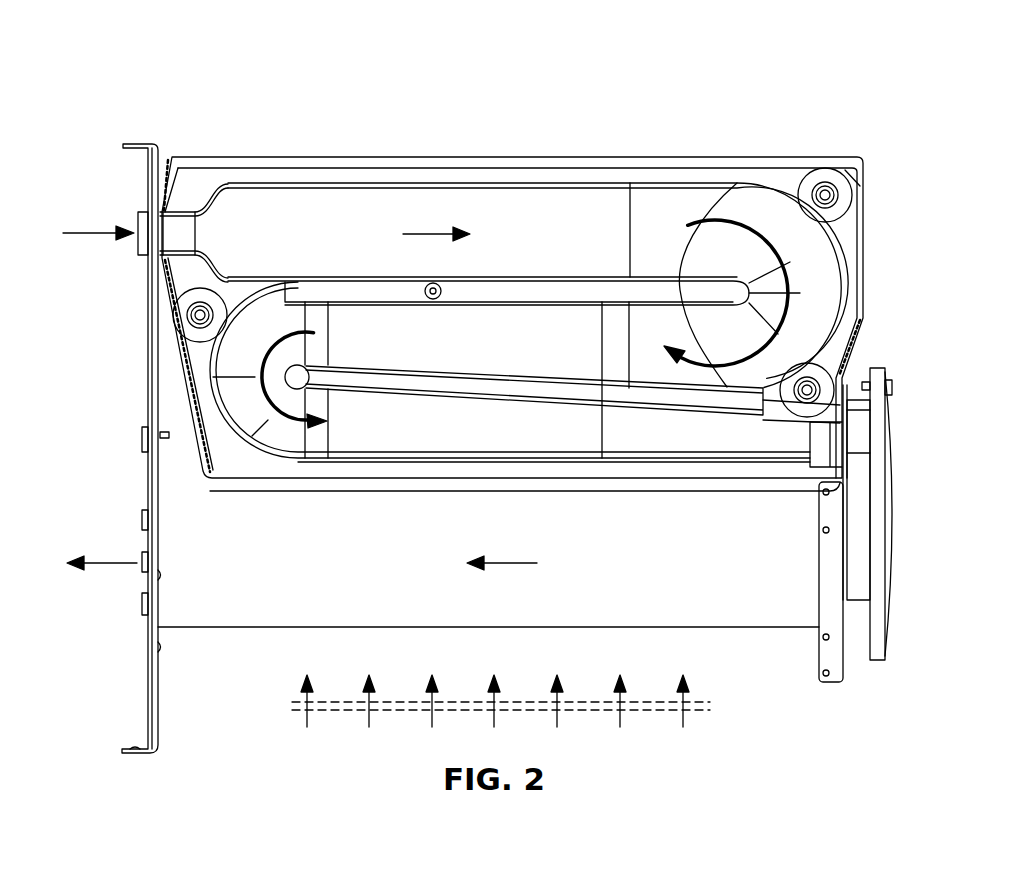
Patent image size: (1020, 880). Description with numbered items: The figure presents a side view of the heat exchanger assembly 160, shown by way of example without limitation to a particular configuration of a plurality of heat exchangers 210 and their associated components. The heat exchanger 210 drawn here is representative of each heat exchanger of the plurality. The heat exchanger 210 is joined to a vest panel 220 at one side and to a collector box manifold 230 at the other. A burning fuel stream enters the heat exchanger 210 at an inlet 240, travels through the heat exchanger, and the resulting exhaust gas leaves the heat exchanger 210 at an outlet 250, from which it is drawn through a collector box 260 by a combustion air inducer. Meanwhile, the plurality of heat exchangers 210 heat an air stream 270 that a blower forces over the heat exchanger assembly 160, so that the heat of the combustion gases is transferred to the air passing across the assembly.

The heat exchanger assembly 160 is at (297, 67).
The heat exchanger 210 is at (775, 157).
The vest panel 220 is at (148, 350).
The collector box manifold 230 is at (880, 660).
The inlet 240 is at (139, 223).
The outlet 250 is at (840, 437).
The collector box 260 is at (743, 628).
The air stream 270 is at (292, 705).